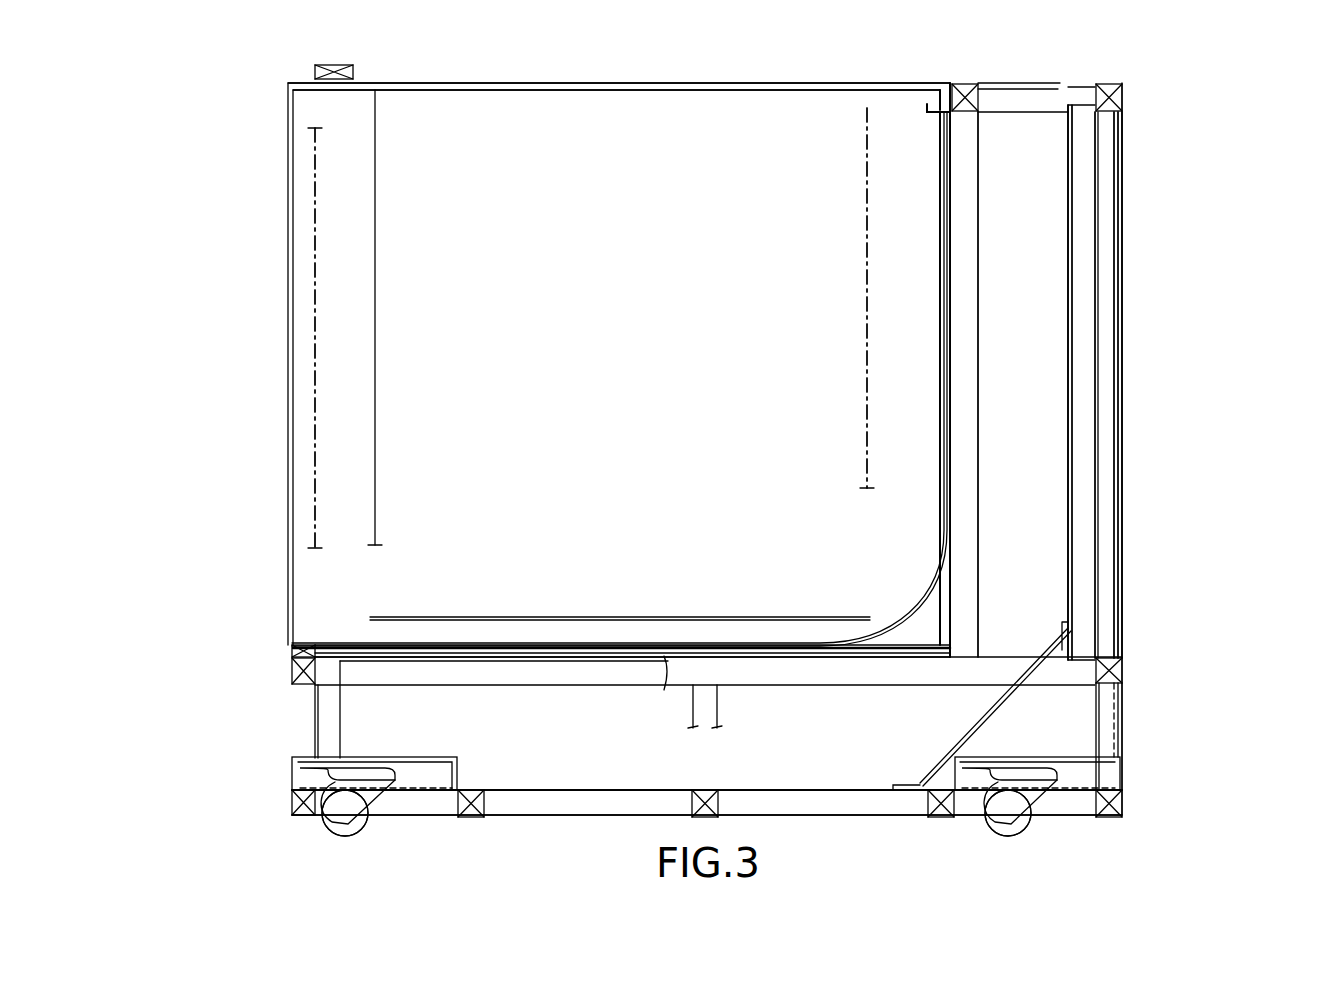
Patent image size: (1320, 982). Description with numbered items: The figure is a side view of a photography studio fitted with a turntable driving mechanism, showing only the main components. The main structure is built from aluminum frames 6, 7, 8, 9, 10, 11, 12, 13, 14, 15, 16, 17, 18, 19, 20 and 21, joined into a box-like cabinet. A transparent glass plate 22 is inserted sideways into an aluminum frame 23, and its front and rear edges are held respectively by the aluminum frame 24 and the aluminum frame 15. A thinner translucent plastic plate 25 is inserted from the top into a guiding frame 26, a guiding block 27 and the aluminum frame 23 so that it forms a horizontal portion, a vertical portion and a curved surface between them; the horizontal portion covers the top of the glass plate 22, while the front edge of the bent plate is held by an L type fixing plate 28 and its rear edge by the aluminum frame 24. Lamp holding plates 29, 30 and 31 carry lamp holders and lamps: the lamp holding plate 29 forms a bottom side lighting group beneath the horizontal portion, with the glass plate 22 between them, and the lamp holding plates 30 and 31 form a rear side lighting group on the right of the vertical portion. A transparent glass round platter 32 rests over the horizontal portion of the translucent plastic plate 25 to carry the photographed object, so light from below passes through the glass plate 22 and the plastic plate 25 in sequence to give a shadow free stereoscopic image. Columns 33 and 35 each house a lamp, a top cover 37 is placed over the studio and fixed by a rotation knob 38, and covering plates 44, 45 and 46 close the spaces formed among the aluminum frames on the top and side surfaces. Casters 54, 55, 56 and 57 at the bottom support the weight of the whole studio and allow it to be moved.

The aluminum frame 6 is at (305, 680).
The aluminum frame 7 is at (468, 818).
The aluminum frame 8 is at (692, 808).
The aluminum frame 9 is at (700, 708).
The aluminum frame 10 is at (940, 818).
The aluminum frame 11 is at (1122, 806).
The aluminum frame 12 is at (1122, 676).
The aluminum frame 13 is at (962, 98).
The aluminum frame 14 is at (1122, 99).
The aluminum frame 15 is at (1100, 285).
The aluminum frame 16 is at (1105, 340).
The aluminum frame 17 is at (752, 682).
The aluminum frame 18 is at (322, 718).
The aluminum frame 19 is at (890, 818).
The aluminum frame 20 is at (1112, 715).
The aluminum frame 21 is at (1048, 104).
The transparent glass plate 22 is at (843, 657).
The aluminum frame 23 is at (885, 657).
The aluminum frame 24 is at (304, 651).
The translucent plastic plate 25 is at (940, 458).
The guiding frame 26 is at (948, 188).
The guiding block 27 is at (930, 601).
The L type fixing plate 28 is at (927, 103).
The lamp holding plate 29 is at (822, 792).
The lamp holding plate 30 is at (1006, 713).
The lamp holding plate 31 is at (1072, 394).
The transparent glass round platter 32 is at (380, 617).
The column 33 is at (355, 259).
The column 35 is at (895, 290).
The top cover 37 is at (694, 83).
The rotation knob 38 is at (315, 72).
The covering plate 44 is at (1006, 88).
The covering plate 45 is at (1118, 238).
The covering plate 46 is at (1122, 752).
The caster 54 is at (330, 828).
The caster 55 is at (345, 813).
The caster 56 is at (1030, 822).
The caster 57 is at (1008, 813).